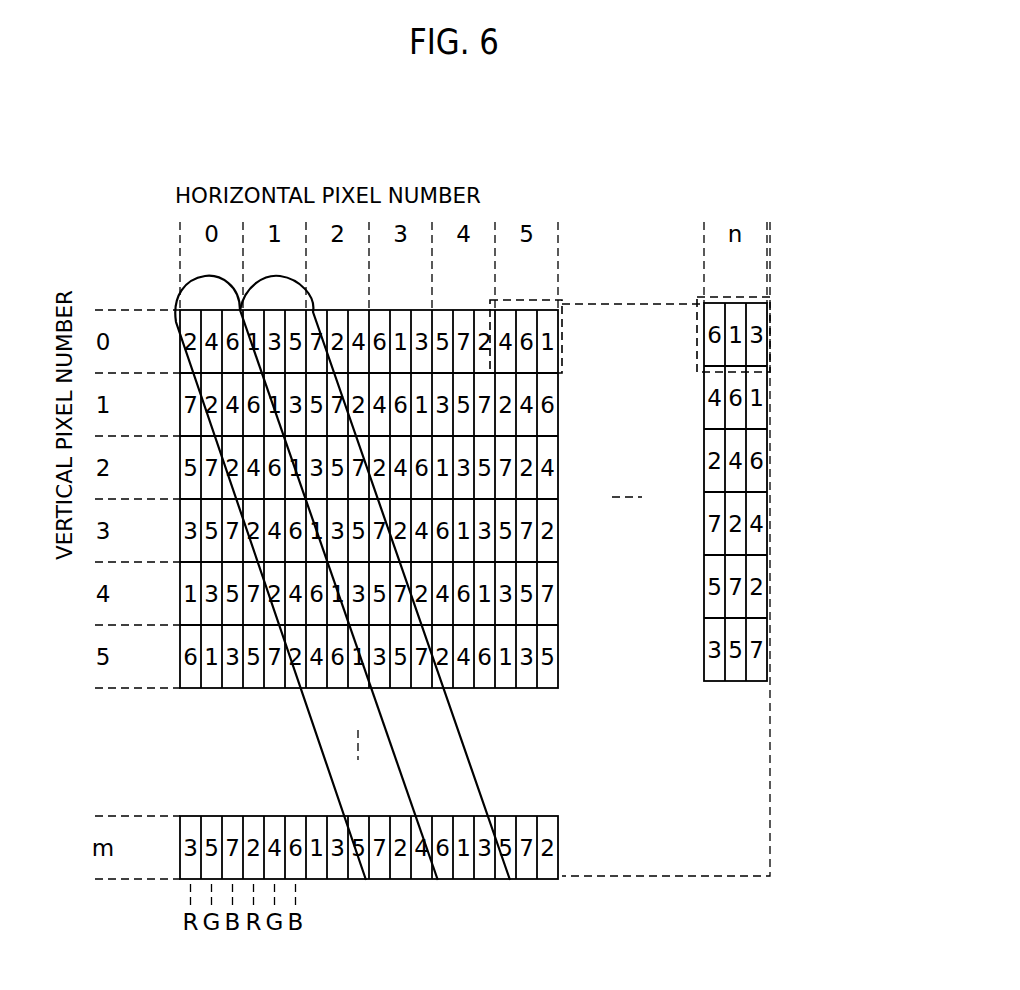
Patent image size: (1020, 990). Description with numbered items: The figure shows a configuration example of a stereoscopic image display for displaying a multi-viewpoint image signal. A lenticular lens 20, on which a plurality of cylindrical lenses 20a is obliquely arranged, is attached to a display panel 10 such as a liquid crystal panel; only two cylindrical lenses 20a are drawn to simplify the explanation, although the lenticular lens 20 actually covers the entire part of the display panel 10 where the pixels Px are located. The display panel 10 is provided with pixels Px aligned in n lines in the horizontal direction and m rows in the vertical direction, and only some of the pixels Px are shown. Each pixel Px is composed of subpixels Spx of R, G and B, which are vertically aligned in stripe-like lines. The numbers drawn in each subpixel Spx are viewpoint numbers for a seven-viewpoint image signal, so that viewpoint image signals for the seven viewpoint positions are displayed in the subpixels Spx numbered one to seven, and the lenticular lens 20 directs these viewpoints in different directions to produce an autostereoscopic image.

The display panel 10 is at (643, 877).
The lenticular lens 20 is at (463, 740).
The cylindrical lens 20a is at (392, 795).
The pixel Px is at (563, 340).
The subpixel Spx is at (763, 385).